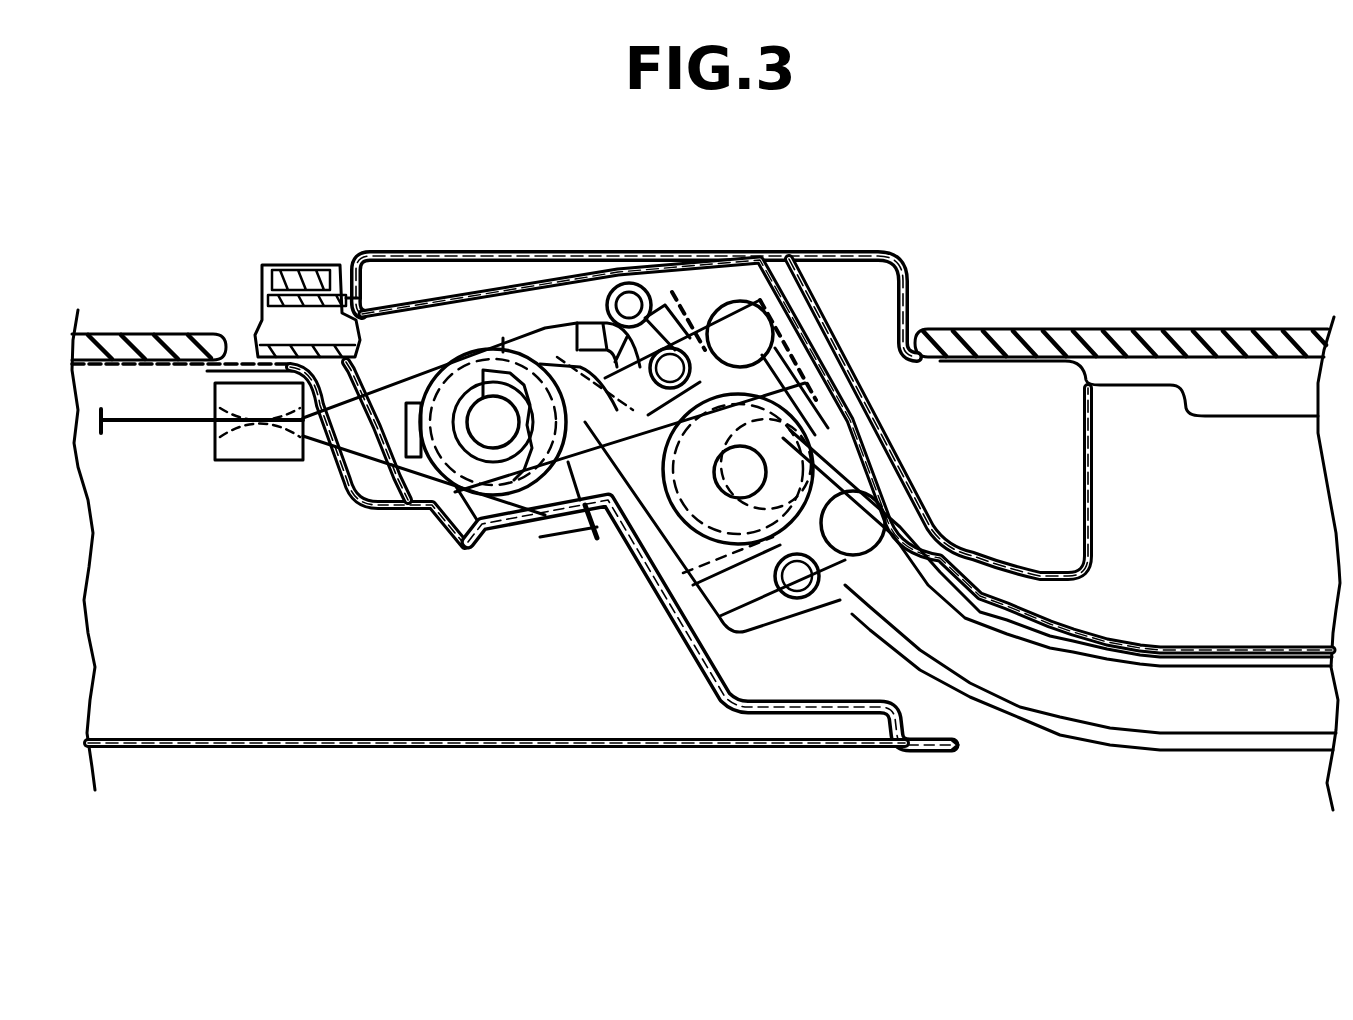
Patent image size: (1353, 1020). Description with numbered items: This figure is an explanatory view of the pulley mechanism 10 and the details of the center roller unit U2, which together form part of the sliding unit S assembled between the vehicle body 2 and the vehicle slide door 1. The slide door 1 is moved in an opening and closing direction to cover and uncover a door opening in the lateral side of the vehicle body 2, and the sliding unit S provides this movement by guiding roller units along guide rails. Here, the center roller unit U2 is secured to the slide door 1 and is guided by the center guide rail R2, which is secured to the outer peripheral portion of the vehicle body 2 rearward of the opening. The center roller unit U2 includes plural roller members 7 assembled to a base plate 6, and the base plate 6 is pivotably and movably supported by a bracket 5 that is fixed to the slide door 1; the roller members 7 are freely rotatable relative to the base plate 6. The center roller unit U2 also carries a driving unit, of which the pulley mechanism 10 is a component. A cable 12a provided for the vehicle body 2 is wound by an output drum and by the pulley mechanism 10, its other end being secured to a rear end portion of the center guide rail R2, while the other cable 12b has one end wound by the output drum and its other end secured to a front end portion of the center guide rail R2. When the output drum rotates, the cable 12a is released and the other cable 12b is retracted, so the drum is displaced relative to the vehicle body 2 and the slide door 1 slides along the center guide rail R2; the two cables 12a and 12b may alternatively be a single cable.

The vehicle slide door 1 is at (398, 752).
The vehicle body 2 is at (824, 254).
The bracket 5 is at (513, 508).
The base plate 6 is at (728, 605).
The roller members 7 is at (735, 316).
The pulley mechanism 10 is at (797, 430).
The cable 12a is at (342, 472).
The other cable 12b is at (396, 364).
The center roller unit U2 is at (829, 612).
The center guide rail R2 is at (1218, 752).
The sliding unit S is at (996, 772).